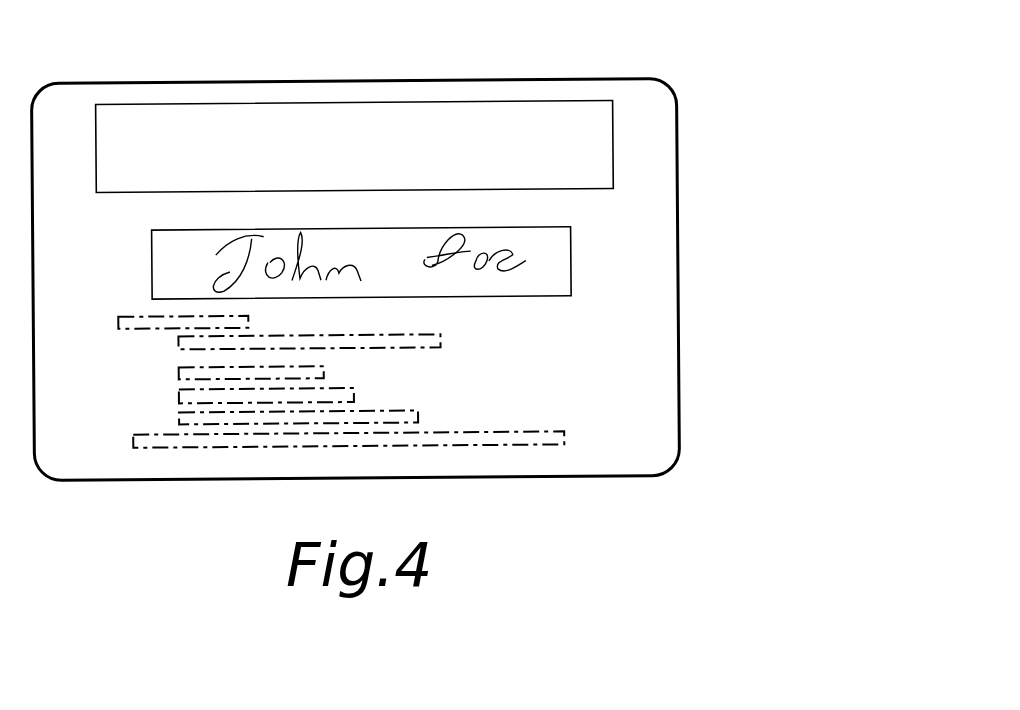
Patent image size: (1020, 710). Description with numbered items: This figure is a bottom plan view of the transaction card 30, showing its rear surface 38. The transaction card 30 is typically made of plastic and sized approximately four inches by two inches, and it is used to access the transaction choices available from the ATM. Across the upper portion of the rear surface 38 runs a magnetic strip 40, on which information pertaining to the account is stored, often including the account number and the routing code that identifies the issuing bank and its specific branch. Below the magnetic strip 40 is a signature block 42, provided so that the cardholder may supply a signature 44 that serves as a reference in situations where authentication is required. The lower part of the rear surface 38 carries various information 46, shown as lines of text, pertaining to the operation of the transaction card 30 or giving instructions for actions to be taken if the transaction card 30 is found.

The transaction card 30 is at (700, 79).
The rear surface 38 is at (570, 383).
The magnetic strip 40 is at (614, 130).
The signature block 42 is at (571, 259).
The signature 44 is at (200, 262).
The information 46 is at (145, 386).